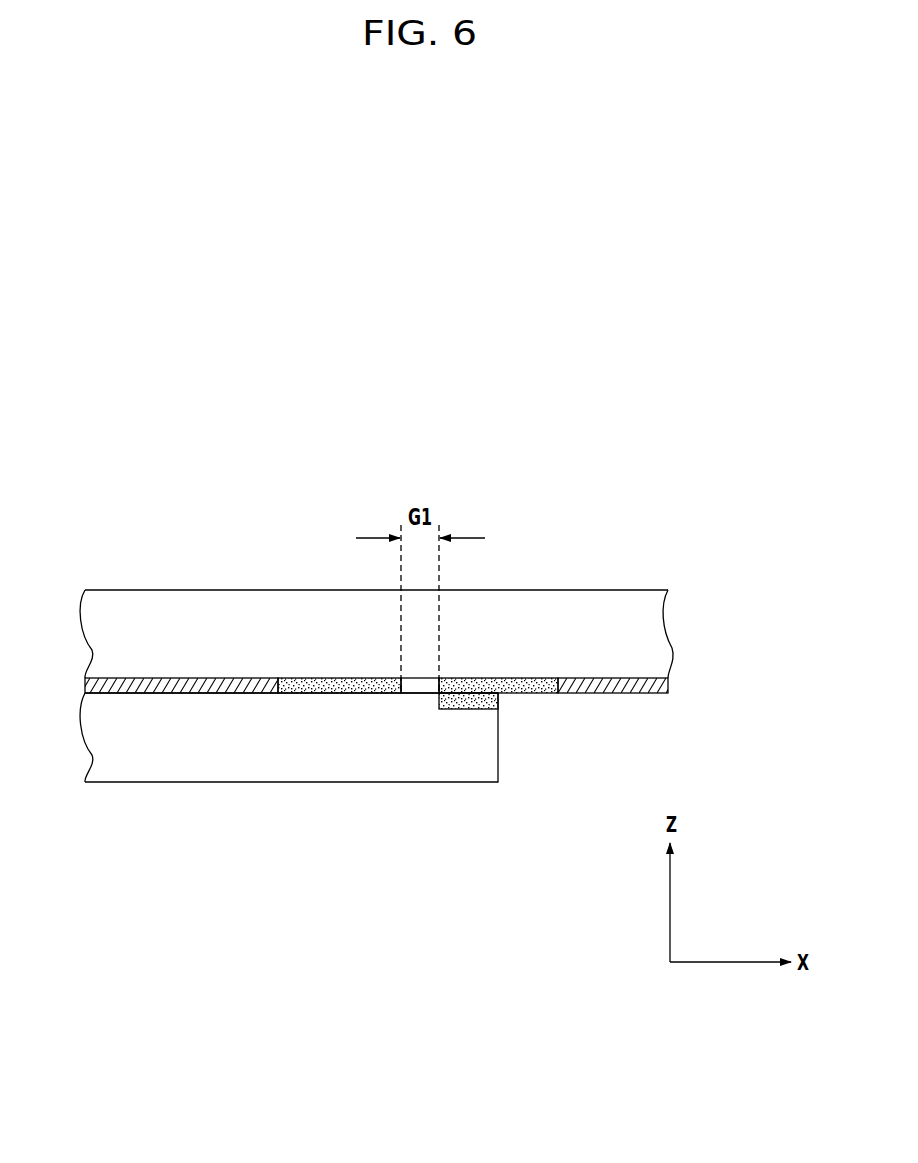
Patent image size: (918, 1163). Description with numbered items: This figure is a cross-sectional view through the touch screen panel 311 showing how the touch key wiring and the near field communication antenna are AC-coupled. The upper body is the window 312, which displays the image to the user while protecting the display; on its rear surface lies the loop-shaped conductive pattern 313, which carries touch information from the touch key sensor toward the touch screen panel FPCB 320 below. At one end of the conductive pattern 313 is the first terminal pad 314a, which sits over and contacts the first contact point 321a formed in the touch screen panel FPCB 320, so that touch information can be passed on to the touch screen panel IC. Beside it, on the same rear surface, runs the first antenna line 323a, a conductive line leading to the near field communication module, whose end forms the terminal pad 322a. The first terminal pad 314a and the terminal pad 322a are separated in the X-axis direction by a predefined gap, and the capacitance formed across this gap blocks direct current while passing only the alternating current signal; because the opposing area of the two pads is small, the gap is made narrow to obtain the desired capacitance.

The touch screen panel 311 is at (397, 571).
The window 312 is at (75, 590).
The conductive pattern 313 is at (622, 695).
The first terminal pad 314a is at (500, 686).
The touch screen panel FPCB 320 is at (289, 737).
The first contact point 321a is at (492, 710).
The terminal pad 322a is at (393, 686).
The first antenna line 323a is at (128, 684).